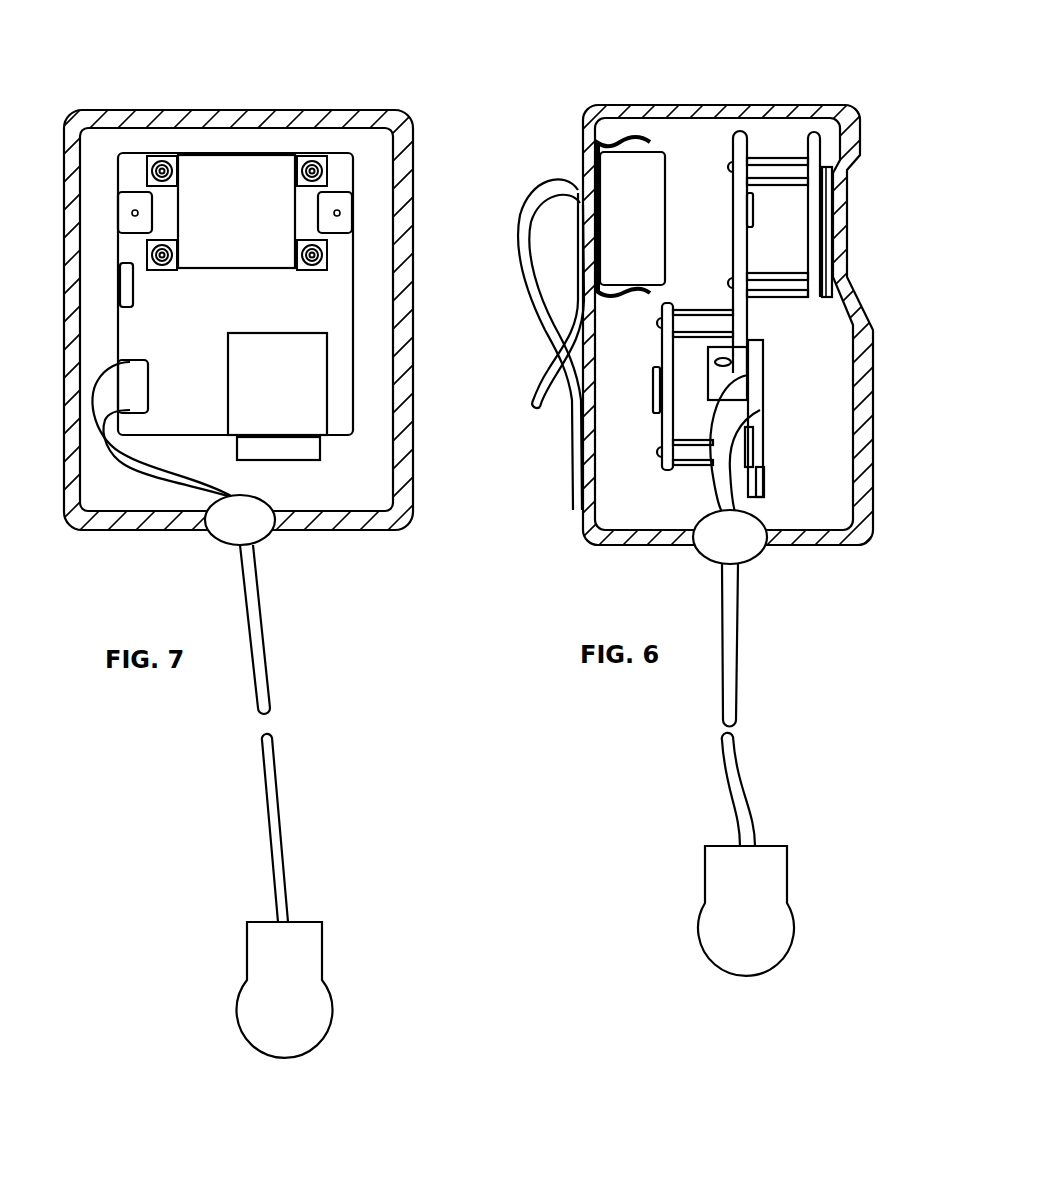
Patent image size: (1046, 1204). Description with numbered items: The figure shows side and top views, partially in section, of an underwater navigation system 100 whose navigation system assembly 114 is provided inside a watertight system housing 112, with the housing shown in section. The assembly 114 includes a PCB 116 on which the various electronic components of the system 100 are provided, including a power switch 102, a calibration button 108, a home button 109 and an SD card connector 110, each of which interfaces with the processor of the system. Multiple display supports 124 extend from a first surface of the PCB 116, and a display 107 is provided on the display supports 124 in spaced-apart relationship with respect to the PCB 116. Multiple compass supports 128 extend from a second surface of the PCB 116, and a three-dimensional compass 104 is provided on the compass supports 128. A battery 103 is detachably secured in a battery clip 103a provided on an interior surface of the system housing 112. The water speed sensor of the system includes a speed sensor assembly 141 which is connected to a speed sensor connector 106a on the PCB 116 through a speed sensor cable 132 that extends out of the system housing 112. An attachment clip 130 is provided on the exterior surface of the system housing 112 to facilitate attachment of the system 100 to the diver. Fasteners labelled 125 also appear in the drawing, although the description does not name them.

In FIG. 7, the system 100 is at (398, 108).
In FIG. 6, the system 100 is at (580, 112).
In FIG. 7, the power switch 102 is at (133, 300).
In FIG. 6, the battery 103 is at (635, 183).
In FIG. 6, the battery clip 103a is at (607, 280).
In FIG. 6, the three-dimensional compass 104 is at (667, 473).
In FIG. 7, the speed sensor connector 106a is at (137, 393).
In FIG. 6, the speed sensor connector 106a is at (753, 413).
In FIG. 7, the display 107 is at (235, 253).
In FIG. 6, the display 107 is at (825, 300).
In FIG. 7, the calibration button 108 is at (127, 207).
In FIG. 7, the home button 109 is at (342, 210).
In FIG. 7, the SD card connector 110 is at (285, 448).
In FIG. 6, the SD card connector 110 is at (763, 497).
In FIG. 7, the system housing 112 is at (360, 530).
In FIG. 6, the system housing 112 is at (620, 545).
In FIG. 7, the navigation system assembly 114 is at (365, 465).
In FIG. 6, the navigation system assembly 114 is at (610, 487).
In FIG. 7, the PCB 116 is at (355, 410).
In FIG. 6, the PCB 116 is at (767, 158).
In FIG. 6, the display supports 124 is at (782, 273).
In FIG. 7, the screws 125 is at (297, 157).
In FIG. 6, the compass supports 128 is at (700, 453).
In FIG. 6, the attachment clip 130 is at (540, 307).
In FIG. 7, the speed sensor cable 132 is at (263, 770).
In FIG. 6, the speed sensor cable 132 is at (740, 765).
In FIG. 7, the speed sensor assembly 141 is at (302, 948).
In FIG. 6, the speed sensor assembly 141 is at (762, 873).